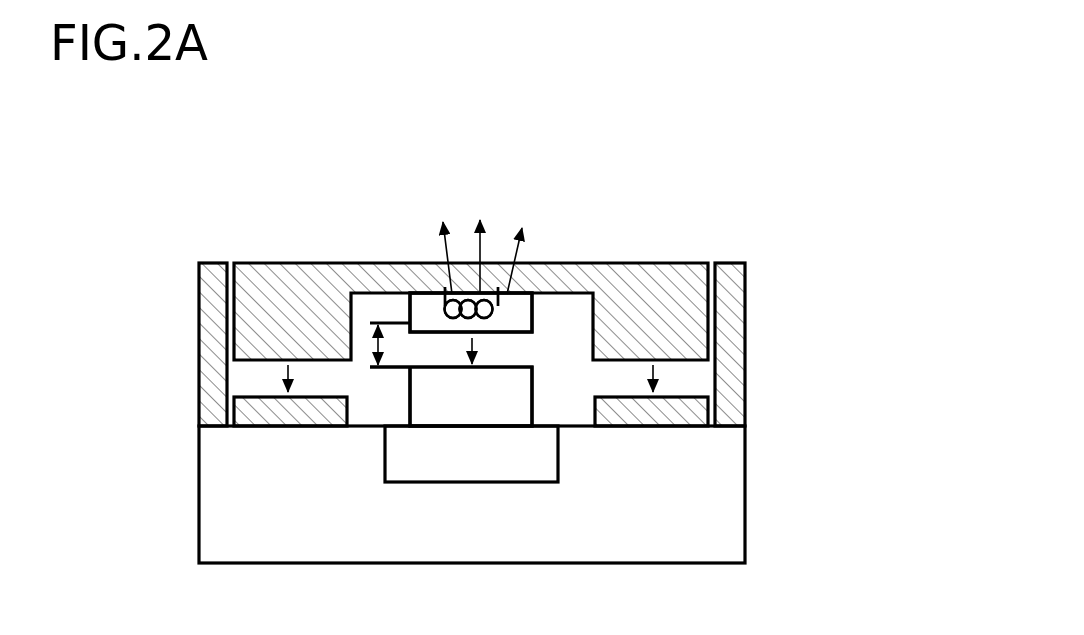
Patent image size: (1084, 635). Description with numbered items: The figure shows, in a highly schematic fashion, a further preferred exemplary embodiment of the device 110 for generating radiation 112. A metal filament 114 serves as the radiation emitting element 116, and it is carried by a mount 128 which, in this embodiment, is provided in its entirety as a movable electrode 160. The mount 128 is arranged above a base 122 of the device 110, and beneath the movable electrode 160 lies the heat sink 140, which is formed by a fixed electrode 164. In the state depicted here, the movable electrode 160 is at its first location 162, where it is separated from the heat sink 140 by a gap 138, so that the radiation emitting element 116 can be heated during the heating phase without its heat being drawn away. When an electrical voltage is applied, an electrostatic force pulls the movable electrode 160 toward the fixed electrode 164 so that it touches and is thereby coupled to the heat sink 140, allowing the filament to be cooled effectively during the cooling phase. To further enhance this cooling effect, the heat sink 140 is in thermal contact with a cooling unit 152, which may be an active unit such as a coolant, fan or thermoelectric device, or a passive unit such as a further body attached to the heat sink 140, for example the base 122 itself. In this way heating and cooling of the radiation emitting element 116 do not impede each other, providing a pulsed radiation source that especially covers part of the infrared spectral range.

The device for generating radiation 110 is at (833, 329).
The radiation 112 is at (522, 192).
The metal filament 114 is at (440, 307).
The radiation emitting element 116 is at (414, 234).
The base 122 is at (745, 505).
The mount 128 is at (527, 308).
The gap 138 is at (375, 347).
The heat sink 140 is at (448, 403).
The cooling unit 152 is at (450, 456).
The movable electrode 160 is at (596, 253).
The first location 162 is at (400, 316).
The fixed electrode 164 is at (293, 443).